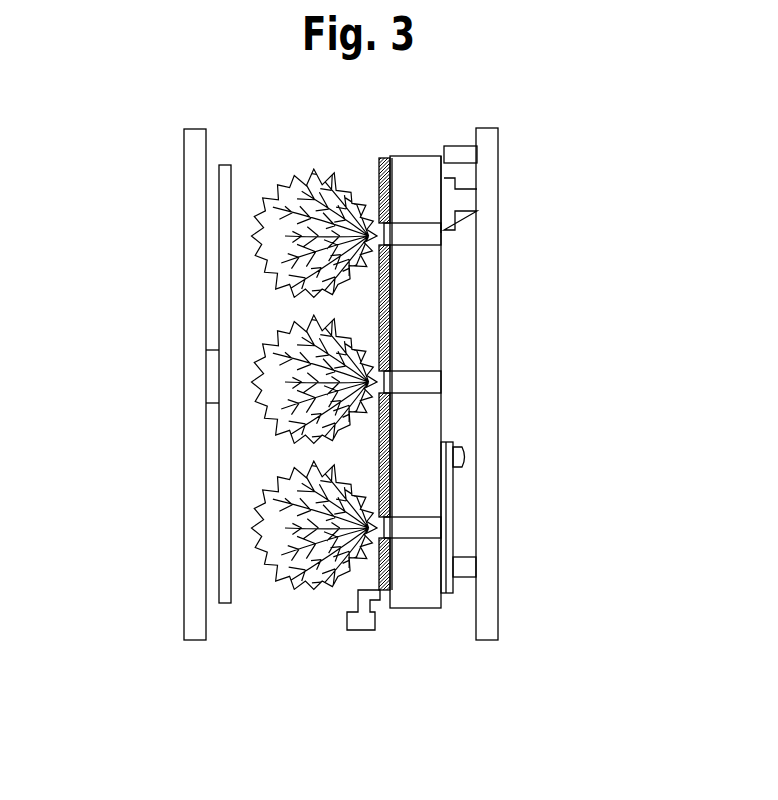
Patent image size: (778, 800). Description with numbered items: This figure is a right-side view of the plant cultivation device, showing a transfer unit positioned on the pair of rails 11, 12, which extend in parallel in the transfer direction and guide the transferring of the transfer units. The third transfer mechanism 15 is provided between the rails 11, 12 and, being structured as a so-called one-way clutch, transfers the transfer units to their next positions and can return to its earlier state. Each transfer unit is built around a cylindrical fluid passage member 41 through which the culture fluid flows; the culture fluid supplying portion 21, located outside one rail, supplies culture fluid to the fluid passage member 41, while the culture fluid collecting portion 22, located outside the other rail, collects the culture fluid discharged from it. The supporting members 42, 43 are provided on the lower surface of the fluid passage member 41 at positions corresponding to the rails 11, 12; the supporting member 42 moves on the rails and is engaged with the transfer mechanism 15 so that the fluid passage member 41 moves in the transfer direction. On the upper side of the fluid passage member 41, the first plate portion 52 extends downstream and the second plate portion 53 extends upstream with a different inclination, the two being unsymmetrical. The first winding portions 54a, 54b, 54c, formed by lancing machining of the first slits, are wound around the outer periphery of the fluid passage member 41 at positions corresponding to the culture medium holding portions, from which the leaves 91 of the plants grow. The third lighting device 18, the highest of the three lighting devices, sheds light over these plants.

The third lighting device 18 is at (219, 236).
The leaves 91 is at (272, 172).
The second plate portion 53 is at (386, 292).
The first plate portion 52 is at (392, 332).
The fluid passage member 41 is at (410, 610).
The first winding portion 54c is at (413, 233).
The first winding portion 54b is at (423, 382).
The first winding portion 54a is at (427, 530).
The culture fluid collecting portion 22 is at (473, 155).
The rail 12 is at (467, 202).
The supporting member 43 is at (443, 227).
The rail 11 is at (468, 572).
The supporting member 42 is at (447, 493).
The third transfer mechanism 15 is at (458, 452).
The culture fluid supplying portion 21 is at (362, 632).